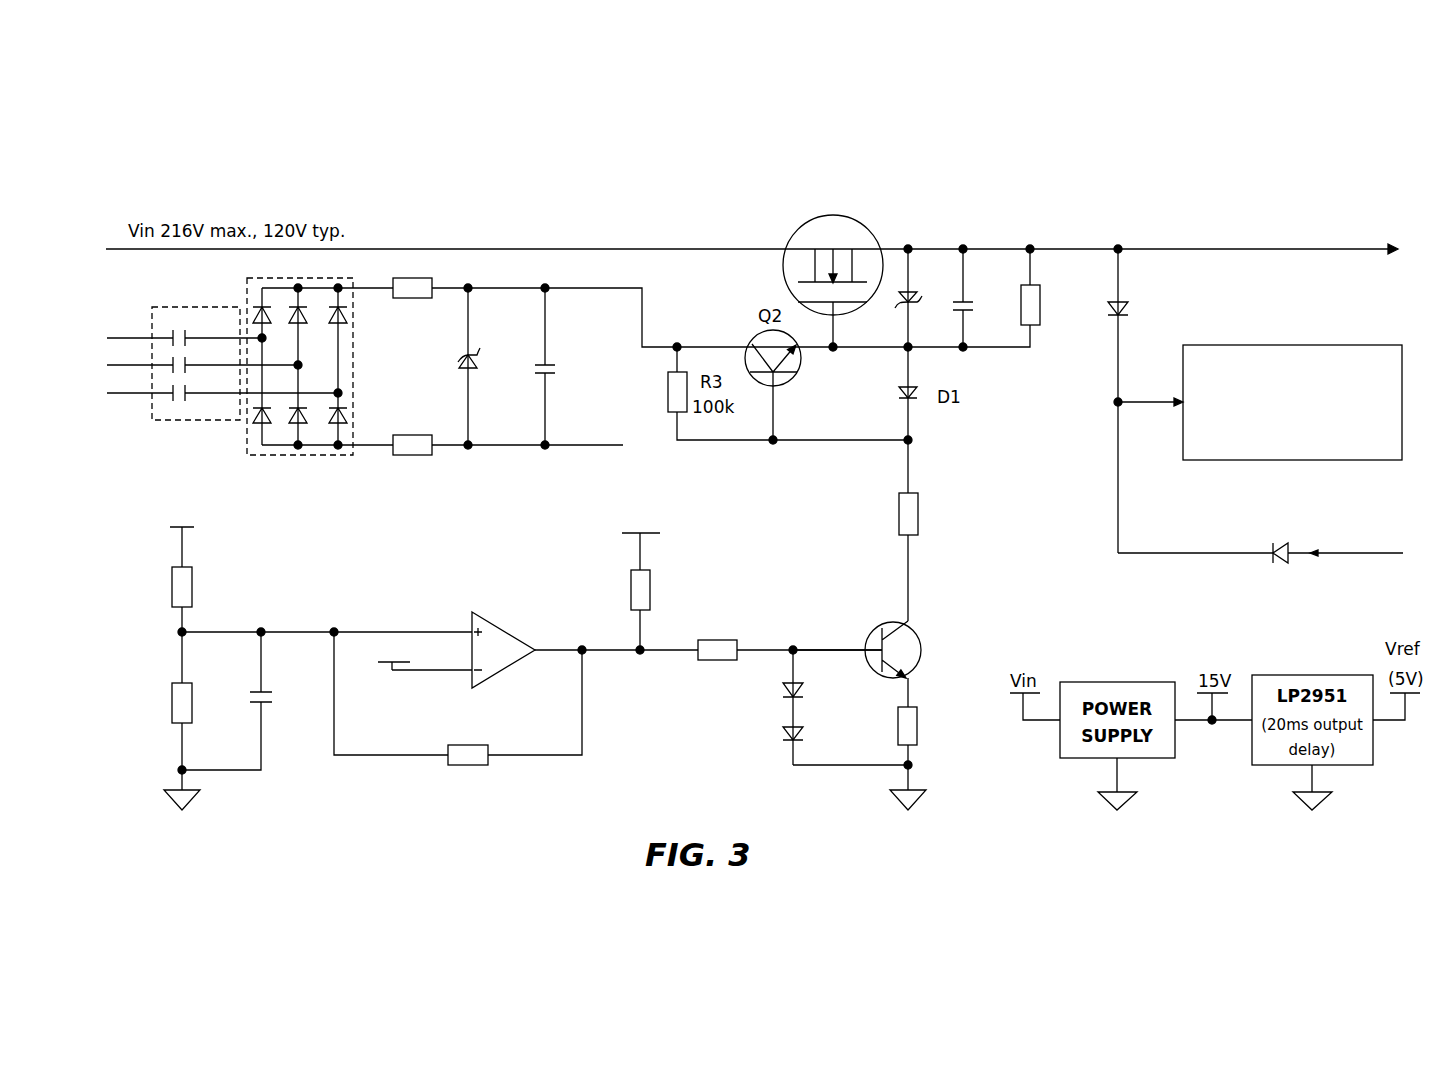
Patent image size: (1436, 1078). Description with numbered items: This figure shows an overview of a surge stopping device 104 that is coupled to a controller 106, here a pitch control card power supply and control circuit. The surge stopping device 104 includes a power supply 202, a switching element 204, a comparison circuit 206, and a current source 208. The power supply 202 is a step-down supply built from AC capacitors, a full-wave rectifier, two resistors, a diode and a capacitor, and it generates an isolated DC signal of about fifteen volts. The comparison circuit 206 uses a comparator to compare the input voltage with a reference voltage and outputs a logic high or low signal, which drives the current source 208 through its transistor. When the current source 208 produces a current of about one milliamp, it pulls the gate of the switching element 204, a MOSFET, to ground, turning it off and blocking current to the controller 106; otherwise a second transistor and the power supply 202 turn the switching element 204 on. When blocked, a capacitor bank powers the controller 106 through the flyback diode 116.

The surge stopping device 104 is at (1094, 166).
The controller 106 is at (1328, 345).
The flyback diode 116 is at (1283, 566).
The power supply 202 is at (447, 478).
The switching element 204 is at (800, 233).
The comparison circuit 206 is at (356, 810).
The current source 208 is at (926, 597).